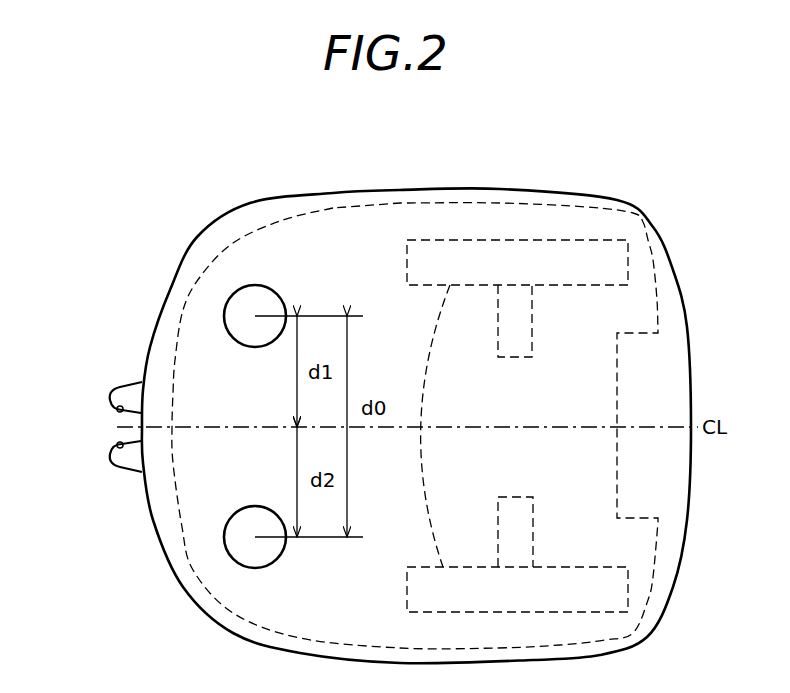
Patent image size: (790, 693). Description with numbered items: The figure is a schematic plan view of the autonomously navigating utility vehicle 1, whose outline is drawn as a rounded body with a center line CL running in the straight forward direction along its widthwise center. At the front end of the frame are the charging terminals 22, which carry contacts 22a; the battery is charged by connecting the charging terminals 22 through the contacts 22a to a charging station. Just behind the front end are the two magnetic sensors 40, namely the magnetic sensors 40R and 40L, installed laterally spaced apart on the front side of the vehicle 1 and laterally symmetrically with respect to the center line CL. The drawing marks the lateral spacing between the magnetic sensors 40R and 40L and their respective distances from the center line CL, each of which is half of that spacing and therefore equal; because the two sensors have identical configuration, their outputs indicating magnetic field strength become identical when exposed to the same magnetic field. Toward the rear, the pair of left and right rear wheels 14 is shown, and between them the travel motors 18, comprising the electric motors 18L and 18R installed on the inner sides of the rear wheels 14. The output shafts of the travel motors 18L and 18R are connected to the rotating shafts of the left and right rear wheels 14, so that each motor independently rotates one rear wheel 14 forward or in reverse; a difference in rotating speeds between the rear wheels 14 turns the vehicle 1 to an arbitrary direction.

The autonomously navigating utility vehicle 1 is at (628, 189).
The charging terminals 22 is at (112, 393).
The contacts 22a is at (118, 444).
The magnetic sensors 40 is at (240, 426).
The right magnetic sensor 40R is at (255, 348).
The left magnetic sensor 40L is at (255, 506).
The rear wheels 14 is at (429, 426).
The travel motors 18 is at (517, 426).
The right travel motor 18R is at (512, 358).
The left travel motor 18L is at (517, 497).